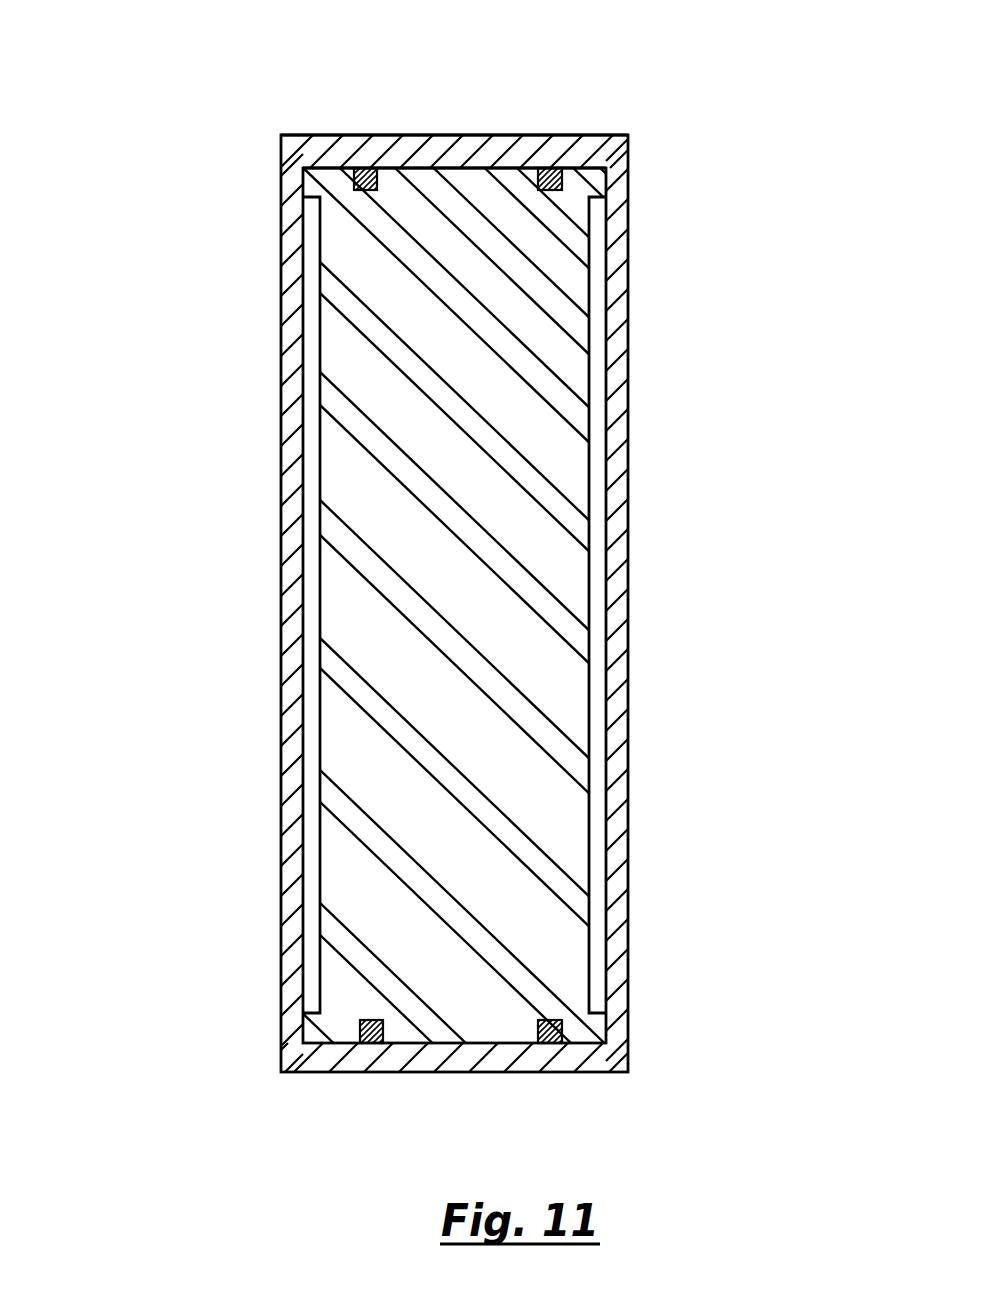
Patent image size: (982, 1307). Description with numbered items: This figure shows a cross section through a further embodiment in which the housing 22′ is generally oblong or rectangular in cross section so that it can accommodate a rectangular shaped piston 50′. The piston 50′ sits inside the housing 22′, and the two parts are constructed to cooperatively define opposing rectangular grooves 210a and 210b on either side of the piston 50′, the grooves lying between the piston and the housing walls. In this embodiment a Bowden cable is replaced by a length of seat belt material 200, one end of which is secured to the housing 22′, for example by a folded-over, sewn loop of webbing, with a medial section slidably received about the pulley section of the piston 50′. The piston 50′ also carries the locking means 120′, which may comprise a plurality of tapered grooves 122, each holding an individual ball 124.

The locking means 120′ is at (372, 164).
The tapered grooves 122 is at (409, 190).
The ball 124 is at (598, 133).
The housing 22′ is at (609, 212).
The piston 50′ is at (397, 340).
The seat belt material 200 is at (612, 432).
The rectangular groove 210a is at (598, 724).
The rectangular groove 210b is at (321, 220).